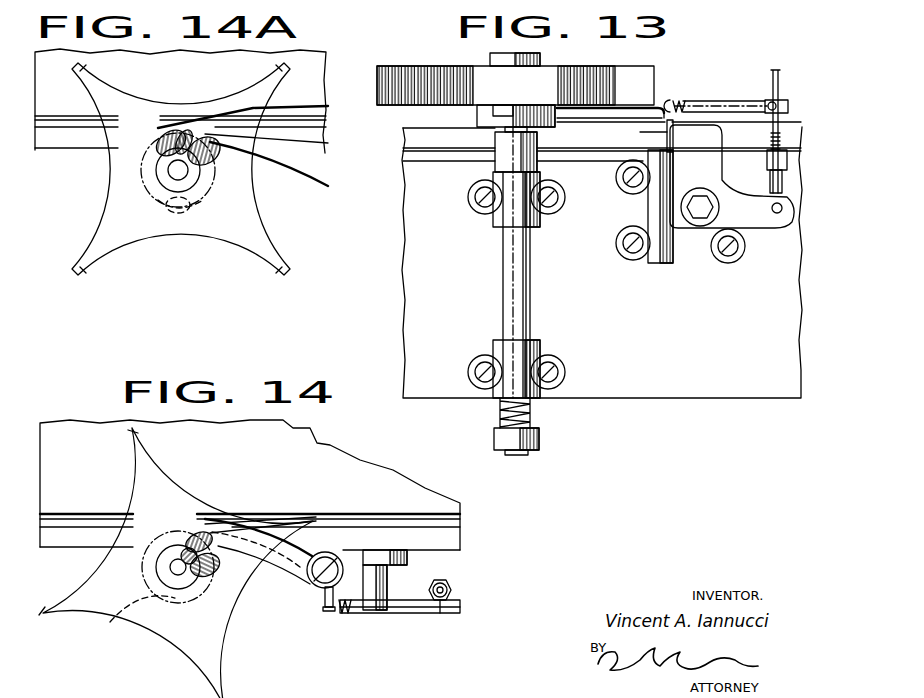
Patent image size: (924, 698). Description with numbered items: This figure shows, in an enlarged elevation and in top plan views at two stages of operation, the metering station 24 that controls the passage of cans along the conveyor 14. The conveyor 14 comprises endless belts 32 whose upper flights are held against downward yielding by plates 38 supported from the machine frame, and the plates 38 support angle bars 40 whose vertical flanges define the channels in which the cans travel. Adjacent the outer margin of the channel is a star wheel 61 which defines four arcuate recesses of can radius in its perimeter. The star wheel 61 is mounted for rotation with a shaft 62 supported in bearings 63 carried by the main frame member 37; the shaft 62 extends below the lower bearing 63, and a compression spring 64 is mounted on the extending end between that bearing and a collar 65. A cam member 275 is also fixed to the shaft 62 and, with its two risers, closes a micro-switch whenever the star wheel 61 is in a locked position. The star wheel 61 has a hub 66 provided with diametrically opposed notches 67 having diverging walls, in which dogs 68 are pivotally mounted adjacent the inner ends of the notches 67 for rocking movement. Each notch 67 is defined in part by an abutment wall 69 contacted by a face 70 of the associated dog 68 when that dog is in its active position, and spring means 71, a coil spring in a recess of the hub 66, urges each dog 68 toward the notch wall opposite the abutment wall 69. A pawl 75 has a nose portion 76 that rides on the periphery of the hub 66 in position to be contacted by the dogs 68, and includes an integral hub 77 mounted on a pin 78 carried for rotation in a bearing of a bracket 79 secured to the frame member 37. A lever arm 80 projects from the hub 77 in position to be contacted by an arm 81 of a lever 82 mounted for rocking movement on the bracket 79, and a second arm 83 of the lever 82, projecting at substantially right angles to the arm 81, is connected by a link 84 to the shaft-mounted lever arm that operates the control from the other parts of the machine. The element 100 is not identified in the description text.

In FIG. 14A, the conveyor 14 is at (57, 100).
In FIG. 14, the conveyor 14 is at (78, 497).
In FIG. 14, the metering station 24 is at (252, 608).
In FIG. 13, the metering station 24 is at (602, 270).
In FIG. 14A, the endless belts 32 is at (79, 105).
In FIG. 14, the endless belts 32 is at (103, 500).
In FIG. 13, the main frame members 37 is at (410, 247).
In FIG. 13, the plates 38 is at (412, 152).
In FIG. 14A, the angle bars 40 is at (104, 140).
In FIG. 14, the angle bars 40 is at (48, 537).
In FIG. 13, the angle bars 40 is at (412, 130).
In FIG. 14A, the star wheel 61 is at (248, 216).
In FIG. 14, the star wheel 61 is at (225, 660).
In FIG. 13, the star wheel 61 is at (635, 80).
In FIG. 13, the shaft 62 is at (503, 270).
In FIG. 13, the bearings 63 is at (482, 200).
In FIG. 13, the compression spring 64 is at (535, 412).
In FIG. 13, the collar 65 is at (542, 437).
In FIG. 14A, the hub 66 is at (220, 160).
In FIG. 14, the hub 66 is at (218, 570).
In FIG. 13, the hub 66 is at (490, 117).
In FIG. 14A, the notches 67 is at (200, 140).
In FIG. 14, the notches 67 is at (199, 540).
In FIG. 13, the notches 67 is at (518, 106).
In FIG. 14A, the dogs 68 is at (184, 128).
In FIG. 14, the dogs 68 is at (216, 560).
In FIG. 13, the dogs 68 is at (497, 106).
In FIG. 14A, the abutment wall 69 is at (172, 133).
In FIG. 14, the abutment wall 69 is at (186, 532).
In FIG. 14A, the face 70 is at (176, 197).
In FIG. 14, the face 70 is at (208, 543).
In FIG. 14A, the spring means 71 is at (186, 197).
In FIG. 14, the spring means 71 is at (193, 538).
In FIG. 14A, the pawl 75 is at (288, 160).
In FIG. 14, the pawl 75 is at (290, 562).
In FIG. 13, the pawl 75 is at (640, 113).
In FIG. 14A, the nose portion 76 is at (220, 126).
In FIG. 14, the nose portion 76 is at (260, 525).
In FIG. 13, the nose portion 76 is at (573, 112).
In FIG. 14, the hub 77 is at (331, 557).
In FIG. 13, the hub 77 is at (650, 147).
In FIG. 14, the pin 78 is at (318, 574).
In FIG. 13, the pin 78 is at (655, 264).
In FIG. 14, the bracket 79 is at (384, 585).
In FIG. 13, the bracket 79 is at (650, 212).
In FIG. 14, the lever arm 80 is at (327, 607).
In FIG. 13, the lever arm 80 is at (666, 131).
In FIG. 14, the arm 81 is at (370, 613).
In FIG. 13, the arm 81 is at (712, 136).
In FIG. 14, the lever 82 is at (392, 614).
In FIG. 13, the lever 82 is at (718, 230).
In FIG. 14, the second arm 83 is at (440, 610).
In FIG. 13, the second arm 83 is at (762, 213).
In FIG. 14, the link 84 is at (452, 590).
In FIG. 13, the link 84 is at (775, 86).
In FIG. 14, the spring 100 is at (345, 616).
In FIG. 13, the spring 100 is at (680, 103).
In FIG. 13, the cam members 275 is at (505, 152).